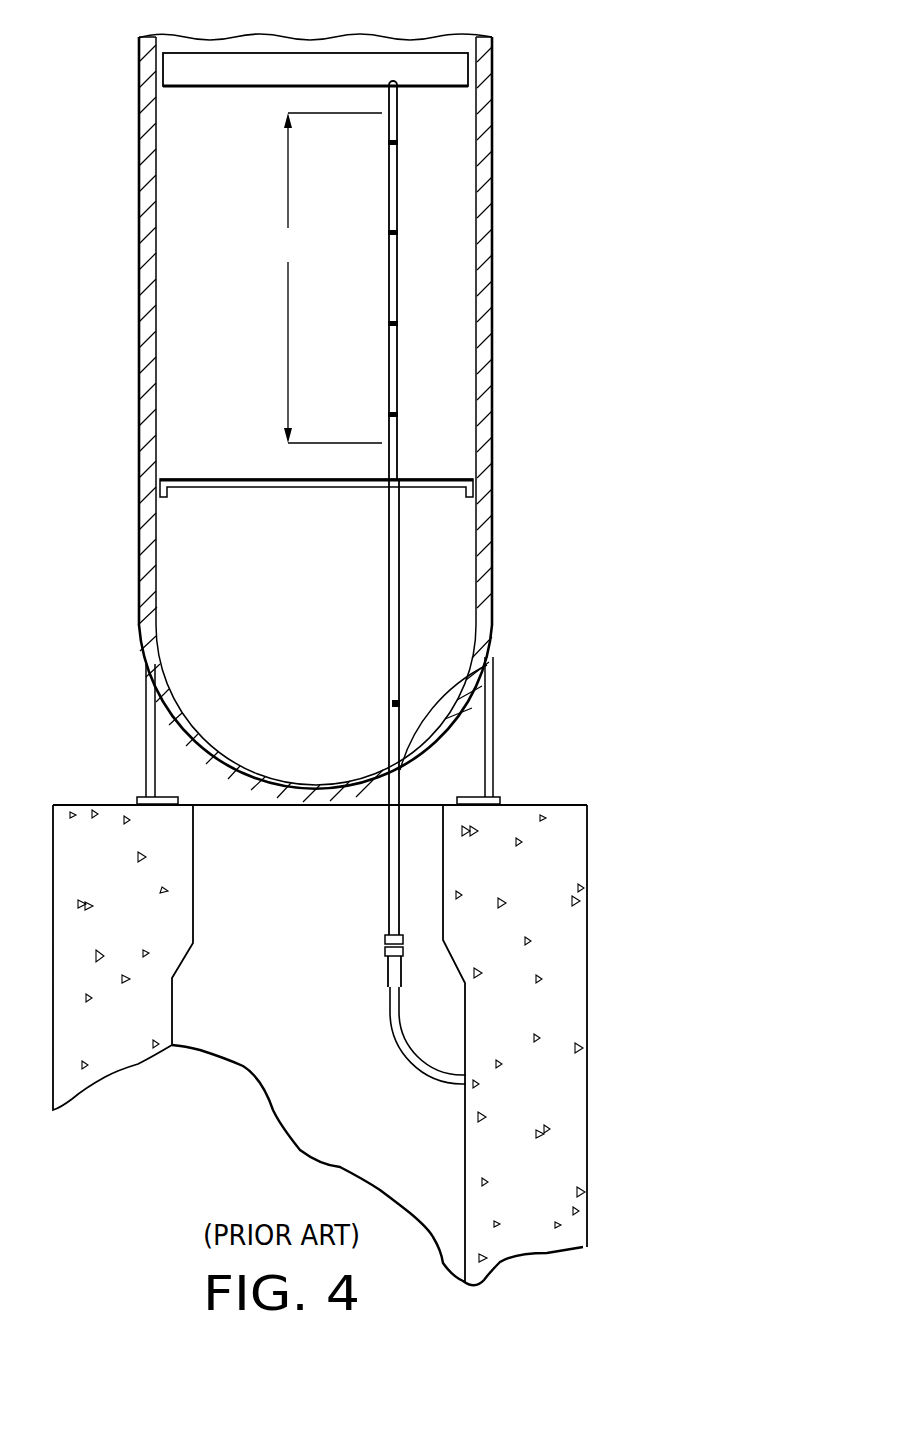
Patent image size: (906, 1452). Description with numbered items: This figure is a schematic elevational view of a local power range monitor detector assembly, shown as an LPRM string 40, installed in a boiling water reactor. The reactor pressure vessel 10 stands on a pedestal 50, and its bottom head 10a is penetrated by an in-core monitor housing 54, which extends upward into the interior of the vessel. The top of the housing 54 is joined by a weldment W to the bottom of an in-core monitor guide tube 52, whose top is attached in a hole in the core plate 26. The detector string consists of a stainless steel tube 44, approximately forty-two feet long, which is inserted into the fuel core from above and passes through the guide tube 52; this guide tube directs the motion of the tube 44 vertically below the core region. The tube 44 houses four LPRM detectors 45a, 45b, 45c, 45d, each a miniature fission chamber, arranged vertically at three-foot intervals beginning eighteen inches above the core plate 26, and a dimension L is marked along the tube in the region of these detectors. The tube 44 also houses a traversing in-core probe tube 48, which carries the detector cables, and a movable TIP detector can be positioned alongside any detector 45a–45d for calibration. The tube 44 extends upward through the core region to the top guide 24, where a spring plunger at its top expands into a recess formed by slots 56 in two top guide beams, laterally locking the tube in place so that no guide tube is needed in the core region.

The reactor pressure vessel 10 is at (132, 558).
The bottom head 10a is at (230, 760).
The top guide 24 is at (242, 62).
The core plate 26 is at (237, 478).
The LPRM string 40 is at (387, 280).
The stainless steel tube 44 is at (398, 191).
The LPRM detector 45a is at (399, 143).
The LPRM detector 45b is at (399, 233).
The LPRM detector 45c is at (399, 324).
The LPRM detector 45d is at (399, 416).
The traversing in-core probe tube 48 is at (405, 1053).
The pedestal 50 is at (202, 855).
The in-core monitor guide tube 52 is at (388, 573).
The in-core monitor housing 54 is at (400, 742).
The slots 56 is at (400, 82).
The sensor length L is at (332, 278).
The weldment W is at (392, 703).